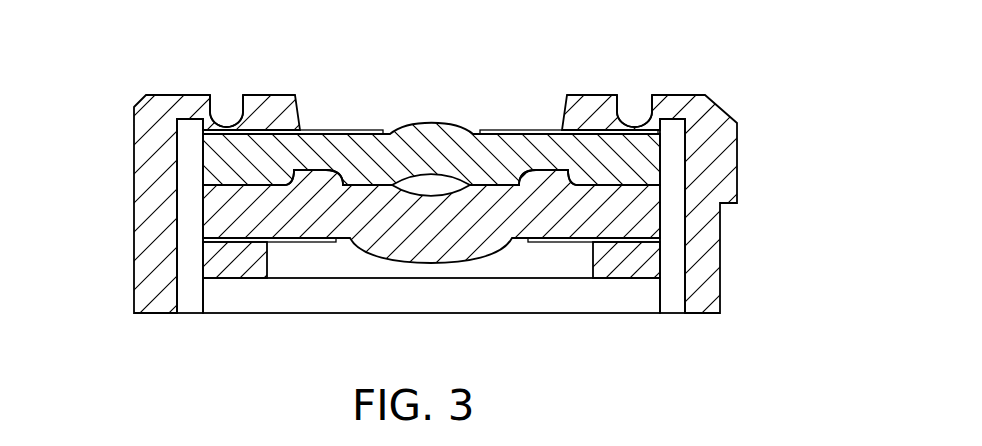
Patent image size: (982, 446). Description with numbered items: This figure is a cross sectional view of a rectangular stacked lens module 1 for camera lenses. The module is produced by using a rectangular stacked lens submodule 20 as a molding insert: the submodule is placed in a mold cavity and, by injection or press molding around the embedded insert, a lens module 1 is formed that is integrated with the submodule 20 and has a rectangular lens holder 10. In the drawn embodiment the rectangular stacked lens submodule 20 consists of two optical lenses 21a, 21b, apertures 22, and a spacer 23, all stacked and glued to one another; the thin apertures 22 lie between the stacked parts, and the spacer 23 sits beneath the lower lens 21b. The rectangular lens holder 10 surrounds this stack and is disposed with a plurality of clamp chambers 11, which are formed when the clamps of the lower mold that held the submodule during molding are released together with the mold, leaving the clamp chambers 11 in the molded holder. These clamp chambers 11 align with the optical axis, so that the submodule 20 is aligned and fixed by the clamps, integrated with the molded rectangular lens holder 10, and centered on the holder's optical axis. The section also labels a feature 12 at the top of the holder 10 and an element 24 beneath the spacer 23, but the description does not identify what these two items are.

The rectangular stacked lens module 1 is at (732, 63).
The rectangular lens holder 10 is at (147, 158).
The clamp chambers 11 is at (188, 223).
The groove 12 is at (225, 104).
The rectangular stacked lens submodule 20 is at (522, 90).
The optical lens 21a is at (320, 148).
The optical lens 21b is at (370, 207).
The apertures 22 is at (497, 129).
The spacer 23 is at (238, 265).
The substrate / plate 24 is at (565, 293).